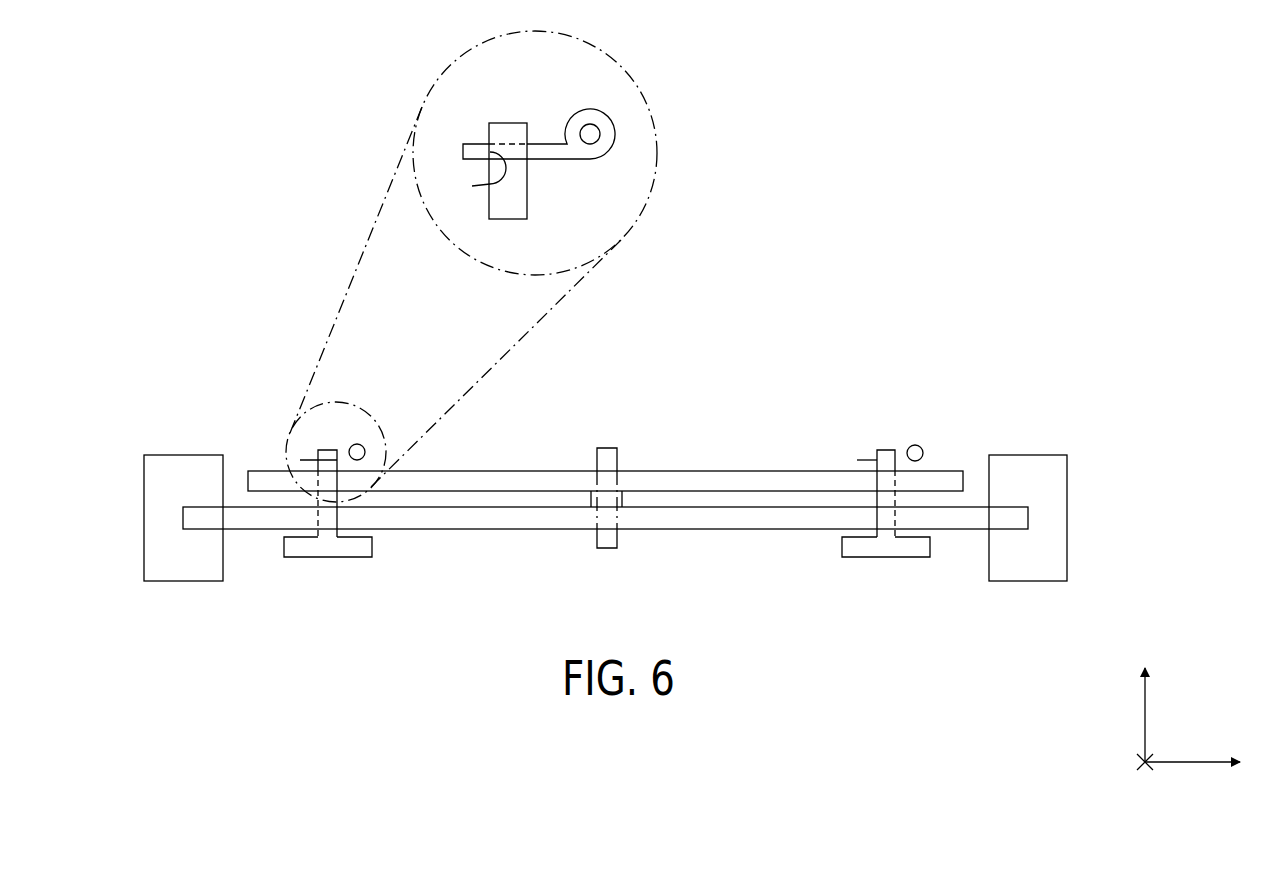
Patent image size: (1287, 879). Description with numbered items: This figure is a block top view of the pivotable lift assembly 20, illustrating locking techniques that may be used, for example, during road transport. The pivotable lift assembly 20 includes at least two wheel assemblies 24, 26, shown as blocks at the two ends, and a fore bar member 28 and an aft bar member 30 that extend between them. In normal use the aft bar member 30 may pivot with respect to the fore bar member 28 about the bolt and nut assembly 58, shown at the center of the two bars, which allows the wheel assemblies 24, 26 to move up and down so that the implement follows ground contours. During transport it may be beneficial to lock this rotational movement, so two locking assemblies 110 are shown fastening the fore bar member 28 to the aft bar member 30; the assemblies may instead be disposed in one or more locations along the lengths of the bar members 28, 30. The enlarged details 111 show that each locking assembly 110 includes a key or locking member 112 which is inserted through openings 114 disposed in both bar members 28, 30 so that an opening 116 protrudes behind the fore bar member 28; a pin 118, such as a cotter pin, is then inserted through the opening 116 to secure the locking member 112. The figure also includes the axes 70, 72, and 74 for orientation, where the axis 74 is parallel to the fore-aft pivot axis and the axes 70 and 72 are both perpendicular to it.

The pivotable lift assist assembly 20 is at (665, 338).
The wheel assembly 24 is at (1027, 581).
The wheel assembly 26 is at (185, 581).
The fore bar member 28 is at (758, 480).
The aft bar member 30 is at (752, 522).
The bolt and nut assembly 58 is at (607, 548).
The axis 70 is at (1187, 762).
The axis 72 is at (1135, 758).
The axis 74 is at (1145, 717).
The locking assembly 110 is at (308, 577).
The details 111 is at (655, 147).
The locking member 112 is at (528, 187).
The openings 114 is at (337, 470).
The opening 116 is at (882, 452).
The pin 118 is at (590, 109).